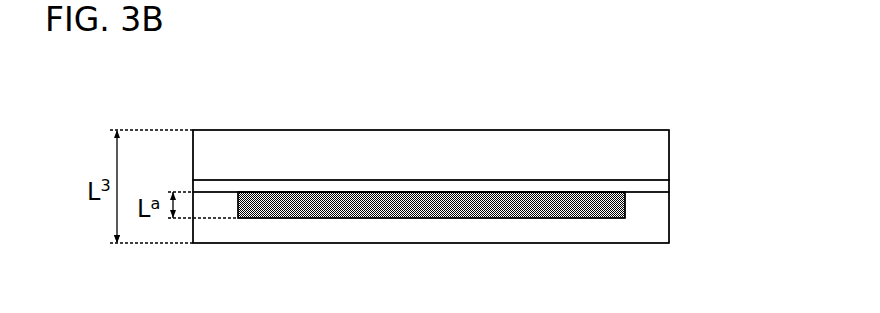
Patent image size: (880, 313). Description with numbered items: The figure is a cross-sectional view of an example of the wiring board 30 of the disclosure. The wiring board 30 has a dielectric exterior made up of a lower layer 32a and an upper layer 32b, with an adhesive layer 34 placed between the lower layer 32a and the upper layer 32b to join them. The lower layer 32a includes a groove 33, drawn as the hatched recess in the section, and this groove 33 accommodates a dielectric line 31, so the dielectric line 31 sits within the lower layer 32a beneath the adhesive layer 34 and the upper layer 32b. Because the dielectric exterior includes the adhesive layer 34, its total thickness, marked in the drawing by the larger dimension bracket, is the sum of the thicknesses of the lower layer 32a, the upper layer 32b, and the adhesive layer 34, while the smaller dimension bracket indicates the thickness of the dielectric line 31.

The wiring board 30 is at (240, 106).
The dielectric line 31 is at (532, 205).
The lower layer 32a is at (655, 222).
The upper layer 32b is at (655, 147).
The groove 33 is at (583, 218).
The adhesive layer 34 is at (660, 187).